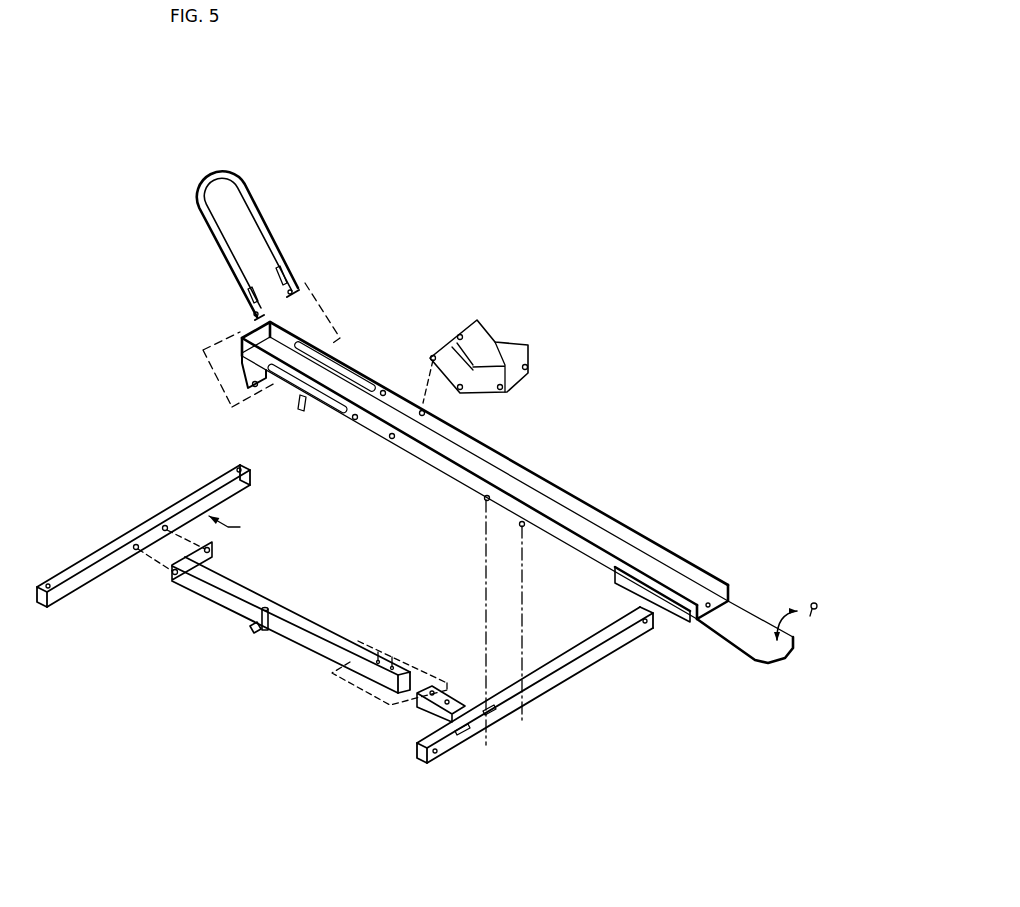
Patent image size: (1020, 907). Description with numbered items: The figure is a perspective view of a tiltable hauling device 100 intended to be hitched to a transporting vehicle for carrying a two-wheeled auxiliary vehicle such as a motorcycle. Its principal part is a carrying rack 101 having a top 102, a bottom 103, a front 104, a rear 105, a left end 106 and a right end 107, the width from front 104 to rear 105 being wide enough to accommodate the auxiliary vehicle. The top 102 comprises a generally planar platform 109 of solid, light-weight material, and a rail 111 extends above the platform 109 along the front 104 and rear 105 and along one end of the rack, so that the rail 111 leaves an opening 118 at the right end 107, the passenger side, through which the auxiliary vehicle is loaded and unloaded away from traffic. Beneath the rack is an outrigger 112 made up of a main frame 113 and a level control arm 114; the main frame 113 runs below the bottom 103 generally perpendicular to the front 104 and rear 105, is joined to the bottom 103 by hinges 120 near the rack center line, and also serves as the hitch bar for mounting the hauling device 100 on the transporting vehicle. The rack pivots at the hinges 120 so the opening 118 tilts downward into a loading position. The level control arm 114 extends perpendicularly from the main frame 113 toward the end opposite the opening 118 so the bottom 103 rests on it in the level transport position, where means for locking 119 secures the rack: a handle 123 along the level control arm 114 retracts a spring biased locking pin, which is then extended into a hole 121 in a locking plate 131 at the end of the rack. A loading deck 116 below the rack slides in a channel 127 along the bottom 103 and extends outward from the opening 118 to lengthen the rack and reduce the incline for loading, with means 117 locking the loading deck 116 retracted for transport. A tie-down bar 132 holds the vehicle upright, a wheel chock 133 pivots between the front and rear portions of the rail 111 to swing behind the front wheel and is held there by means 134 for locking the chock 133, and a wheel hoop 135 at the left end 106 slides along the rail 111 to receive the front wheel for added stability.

The tiltable hauling device 100 is at (290, 124).
The carrying rack 101 is at (500, 222).
The top 102 is at (503, 482).
The bottom 103 is at (418, 472).
The front 104 is at (613, 517).
The rear 105 is at (371, 432).
The left end 106 is at (240, 338).
The right end 107 is at (740, 573).
The platform 109 is at (337, 387).
The rail 111 is at (490, 447).
The outrigger 112 is at (307, 668).
The main frame 113 is at (558, 687).
The level control arm 114 is at (298, 640).
The loading deck 116 is at (783, 652).
The means for locking the loading deck 117 is at (820, 610).
The opening 118 is at (720, 589).
The means for locking 119 is at (174, 560).
The hinges 120 is at (467, 732).
The hole 121 is at (256, 388).
The handle 123 is at (247, 628).
The channel 127 is at (683, 617).
The locking plate 131 is at (250, 391).
The tie-down bar 132 is at (50, 577).
The wheel chock 133 is at (498, 340).
The means for locking the chock 134 is at (433, 360).
The wheel hoop 135 is at (276, 238).